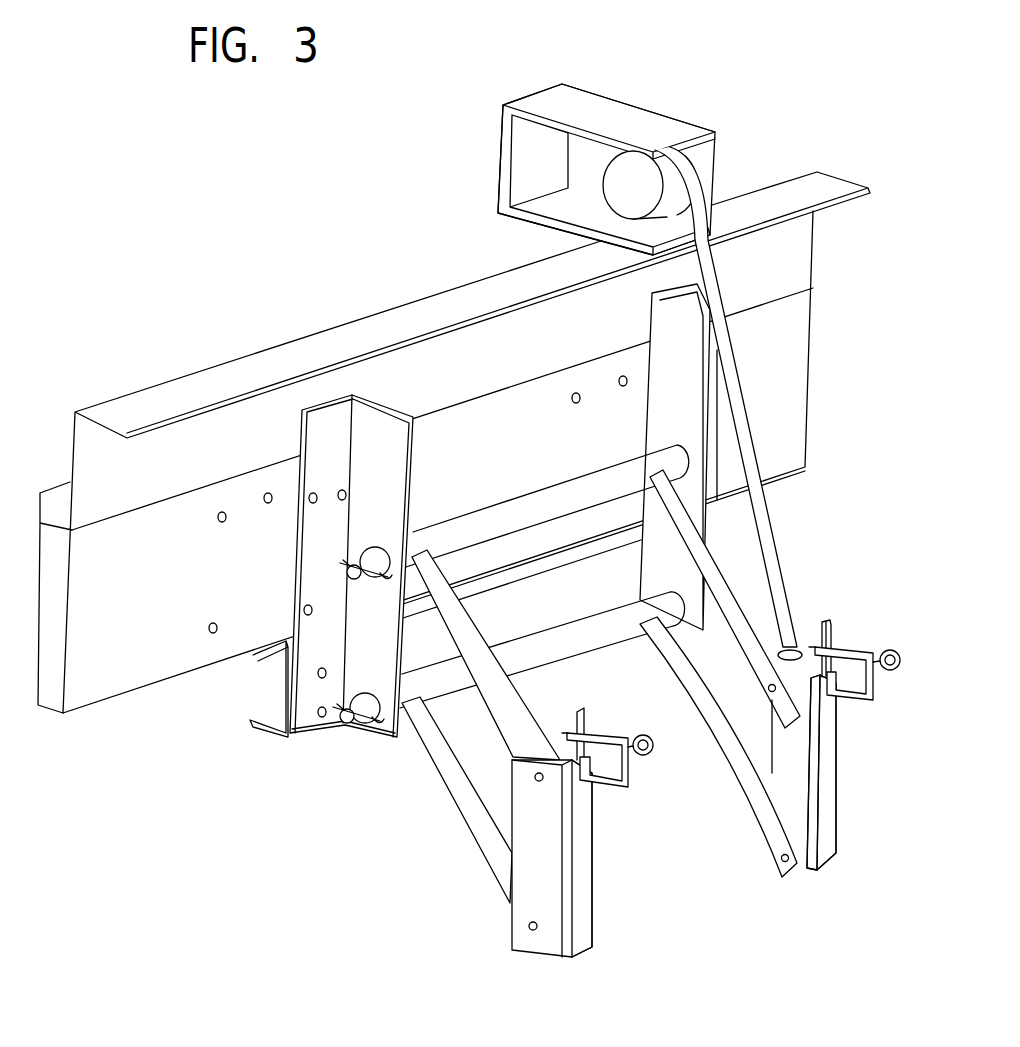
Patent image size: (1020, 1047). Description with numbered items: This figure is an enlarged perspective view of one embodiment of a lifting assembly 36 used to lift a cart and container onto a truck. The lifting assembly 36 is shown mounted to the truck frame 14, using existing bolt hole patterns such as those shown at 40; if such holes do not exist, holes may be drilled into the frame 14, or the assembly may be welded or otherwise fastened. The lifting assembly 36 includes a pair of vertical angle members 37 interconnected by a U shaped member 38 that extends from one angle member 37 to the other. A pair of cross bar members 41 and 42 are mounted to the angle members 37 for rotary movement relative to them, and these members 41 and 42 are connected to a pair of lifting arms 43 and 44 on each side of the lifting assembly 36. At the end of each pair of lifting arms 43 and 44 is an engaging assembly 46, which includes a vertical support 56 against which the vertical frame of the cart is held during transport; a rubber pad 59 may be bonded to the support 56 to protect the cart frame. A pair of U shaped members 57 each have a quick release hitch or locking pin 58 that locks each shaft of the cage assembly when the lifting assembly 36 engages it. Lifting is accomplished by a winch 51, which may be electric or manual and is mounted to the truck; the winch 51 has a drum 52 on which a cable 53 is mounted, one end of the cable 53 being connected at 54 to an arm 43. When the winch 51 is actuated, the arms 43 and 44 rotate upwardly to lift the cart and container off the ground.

The frame 14 is at (48, 668).
The lifting assembly 36 is at (305, 812).
The vertical angle members 37 is at (683, 413).
The U shaped member 38 is at (272, 667).
The bolt hole patterns 40 is at (213, 623).
The cross bar member 41 is at (528, 512).
The cross bar member 42 is at (533, 653).
The lifting arm 43 is at (520, 697).
The lifting arm 44 is at (445, 790).
The engaging assembly 46 is at (683, 806).
The winch 51 is at (684, 103).
The drum 52 is at (702, 167).
The cable 53 is at (768, 543).
The cable connection 54 is at (808, 638).
The vertical support 56 is at (517, 942).
The U shaped members 57 is at (617, 818).
The quick release hitch or locking pin 58 is at (597, 727).
The rubber pad 59 is at (580, 865).